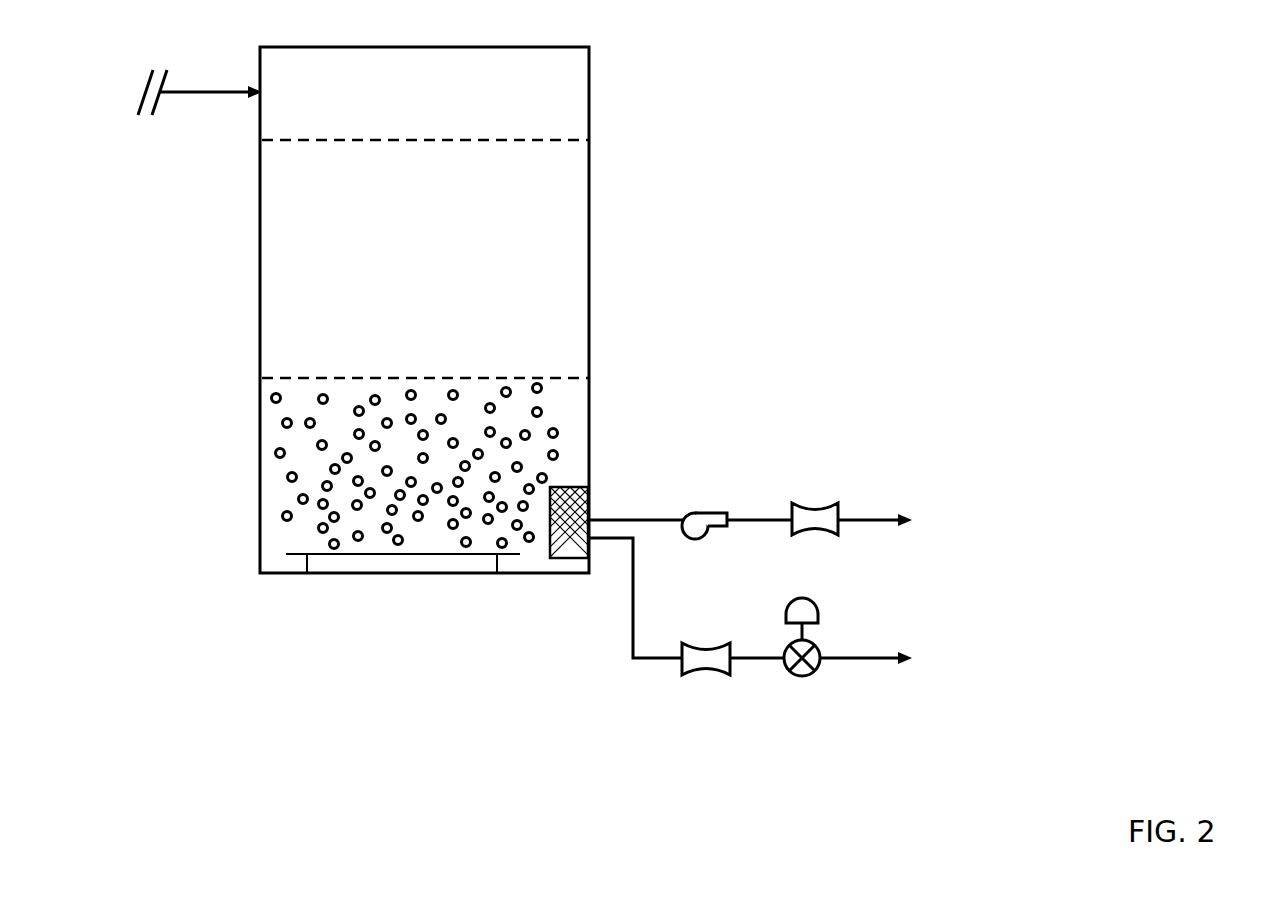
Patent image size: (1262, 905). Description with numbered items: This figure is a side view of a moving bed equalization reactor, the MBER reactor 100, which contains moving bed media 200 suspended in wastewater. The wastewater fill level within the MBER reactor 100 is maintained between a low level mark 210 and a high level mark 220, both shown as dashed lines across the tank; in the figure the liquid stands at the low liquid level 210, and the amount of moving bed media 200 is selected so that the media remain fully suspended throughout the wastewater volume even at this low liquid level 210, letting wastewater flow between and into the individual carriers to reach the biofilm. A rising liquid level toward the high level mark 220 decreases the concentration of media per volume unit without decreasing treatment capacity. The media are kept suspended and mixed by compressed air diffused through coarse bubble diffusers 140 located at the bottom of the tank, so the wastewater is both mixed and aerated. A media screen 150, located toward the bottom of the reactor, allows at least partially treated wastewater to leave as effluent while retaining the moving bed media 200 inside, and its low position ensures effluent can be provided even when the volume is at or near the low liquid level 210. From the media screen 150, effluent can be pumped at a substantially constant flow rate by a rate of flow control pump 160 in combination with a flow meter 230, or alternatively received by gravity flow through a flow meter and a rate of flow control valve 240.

The MBER reactor 100 is at (260, 461).
The coarse bubble diffusers 140 is at (310, 558).
The media screen 150 is at (564, 560).
The rate of flow control pump 160 is at (688, 512).
The moving bed media 200 is at (541, 412).
The low level mark 210 is at (318, 376).
The high level mark 220 is at (325, 141).
The flow meter 230 is at (822, 510).
The rate of flow control valve 240 is at (822, 656).